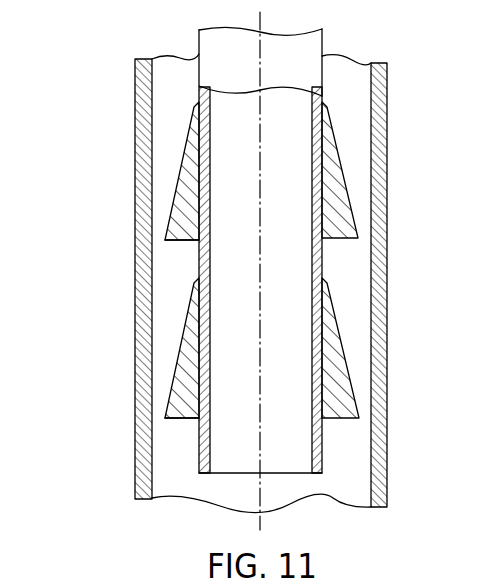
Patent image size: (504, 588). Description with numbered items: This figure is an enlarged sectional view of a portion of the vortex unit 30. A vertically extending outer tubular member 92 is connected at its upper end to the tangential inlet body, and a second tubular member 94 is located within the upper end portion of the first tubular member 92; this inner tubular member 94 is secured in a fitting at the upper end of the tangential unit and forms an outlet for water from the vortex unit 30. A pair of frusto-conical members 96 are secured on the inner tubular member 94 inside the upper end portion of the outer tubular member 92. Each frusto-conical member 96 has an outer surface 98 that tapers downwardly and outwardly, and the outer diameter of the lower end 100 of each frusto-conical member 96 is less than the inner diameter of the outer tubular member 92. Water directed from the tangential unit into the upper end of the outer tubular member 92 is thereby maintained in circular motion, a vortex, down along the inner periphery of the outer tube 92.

The vortex unit 30 is at (250, 271).
The tubular member 92 is at (134, 83).
The second tubular member 94 is at (310, 85).
The frusto-conical members 96 is at (338, 200).
The outer surface 98 is at (184, 147).
The lower end 100 is at (164, 233).